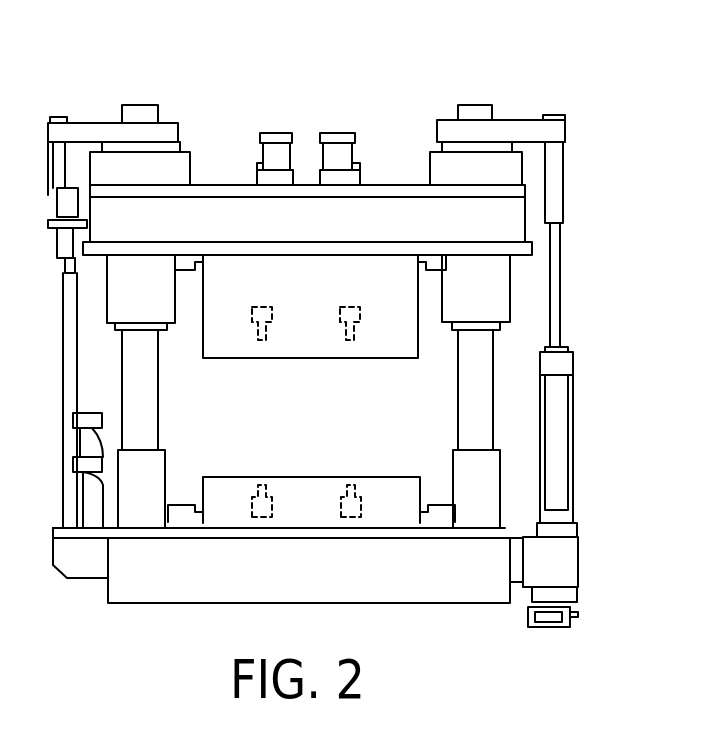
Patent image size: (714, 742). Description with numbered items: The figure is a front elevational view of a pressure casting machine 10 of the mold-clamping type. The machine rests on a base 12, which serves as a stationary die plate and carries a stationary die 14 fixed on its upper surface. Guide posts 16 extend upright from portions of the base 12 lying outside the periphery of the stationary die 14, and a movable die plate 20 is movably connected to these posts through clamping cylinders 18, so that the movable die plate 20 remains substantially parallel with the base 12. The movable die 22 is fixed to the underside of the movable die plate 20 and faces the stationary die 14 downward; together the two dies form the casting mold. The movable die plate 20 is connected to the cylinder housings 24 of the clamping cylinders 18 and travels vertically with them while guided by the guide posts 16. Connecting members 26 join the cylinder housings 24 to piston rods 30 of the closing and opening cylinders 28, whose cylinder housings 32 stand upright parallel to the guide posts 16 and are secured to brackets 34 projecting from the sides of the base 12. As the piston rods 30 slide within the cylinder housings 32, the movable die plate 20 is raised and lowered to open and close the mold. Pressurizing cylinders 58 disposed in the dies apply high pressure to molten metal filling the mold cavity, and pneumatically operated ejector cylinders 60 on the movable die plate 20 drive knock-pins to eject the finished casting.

The casting machine 10 is at (512, 74).
The base 12 is at (288, 595).
The stationary die 14 is at (302, 493).
The guide posts 16 is at (145, 397).
The clamping cylinders 18 is at (195, 150).
The movable die plate 20 is at (380, 210).
The movable die 22 is at (302, 347).
The cylinder housings 24 is at (118, 297).
The connecting members 26 is at (84, 132).
The closing and opening cylinders 28 is at (584, 318).
The piston rods 30 is at (558, 197).
The cylinder housings 32 is at (560, 430).
The brackets 34 is at (565, 565).
The pressurizing cylinders 58 is at (355, 318).
The ejector cylinders 60 is at (277, 147).